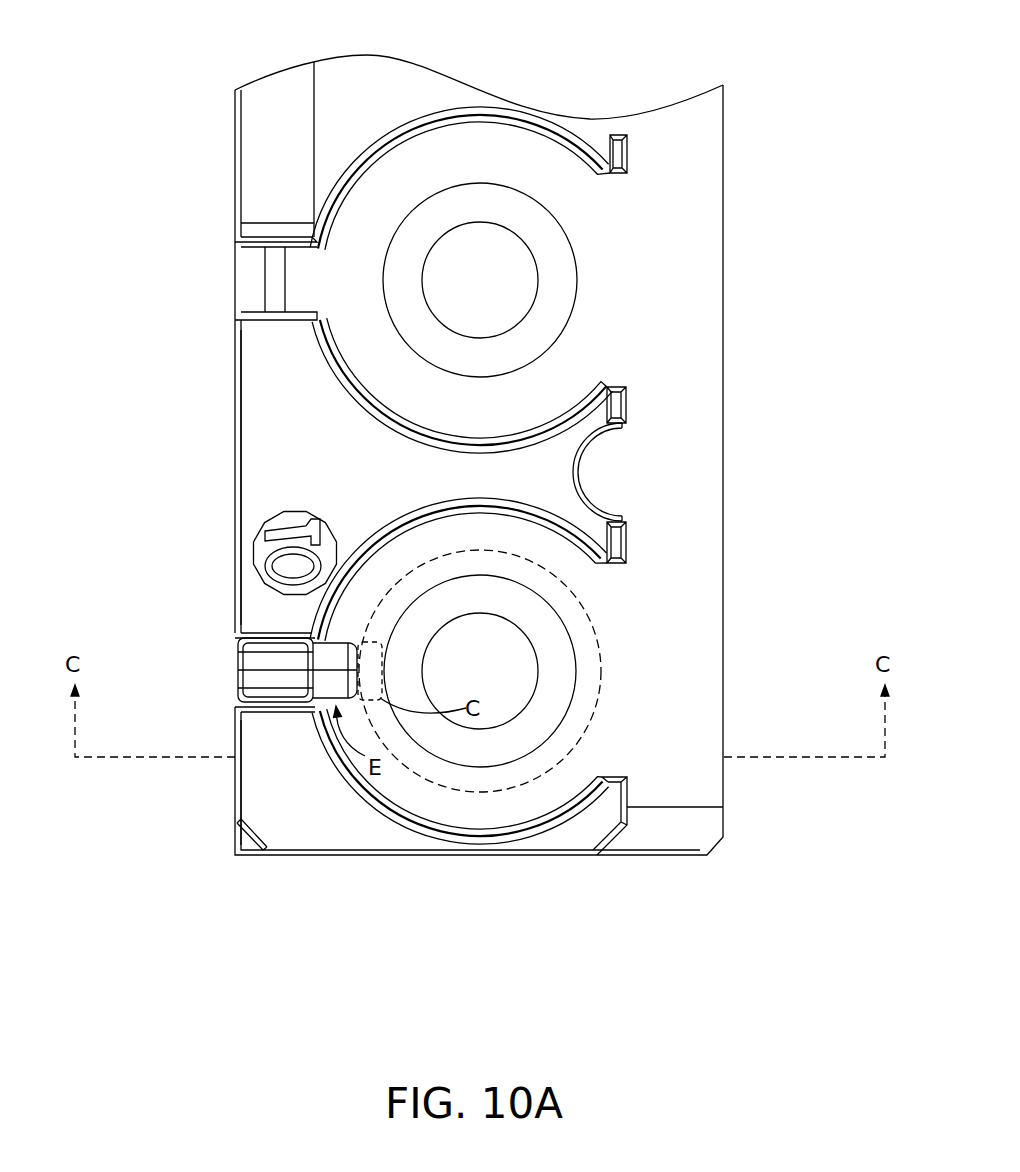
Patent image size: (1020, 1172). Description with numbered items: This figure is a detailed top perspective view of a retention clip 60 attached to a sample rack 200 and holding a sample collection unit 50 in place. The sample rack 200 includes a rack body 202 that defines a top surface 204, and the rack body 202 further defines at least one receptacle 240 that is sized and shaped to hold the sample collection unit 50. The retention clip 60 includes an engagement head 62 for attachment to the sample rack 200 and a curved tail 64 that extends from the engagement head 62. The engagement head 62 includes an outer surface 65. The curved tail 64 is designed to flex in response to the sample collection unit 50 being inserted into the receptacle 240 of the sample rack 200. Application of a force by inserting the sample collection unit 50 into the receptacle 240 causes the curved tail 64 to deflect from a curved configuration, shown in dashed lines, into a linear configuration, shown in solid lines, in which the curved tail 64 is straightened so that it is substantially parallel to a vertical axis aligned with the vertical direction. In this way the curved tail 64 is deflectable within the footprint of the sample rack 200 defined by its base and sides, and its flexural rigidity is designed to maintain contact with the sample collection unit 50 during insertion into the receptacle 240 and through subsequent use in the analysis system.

The sample rack 200 is at (166, 336).
The rack body 202 is at (232, 545).
The top surface 204 is at (318, 838).
The sample collection unit 50 is at (600, 656).
The receptacle 240 is at (557, 553).
The retention clip 60 is at (227, 667).
The engagement head 62 is at (253, 683).
The curved tail 64 is at (347, 648).
The outer surface 65 is at (280, 690).